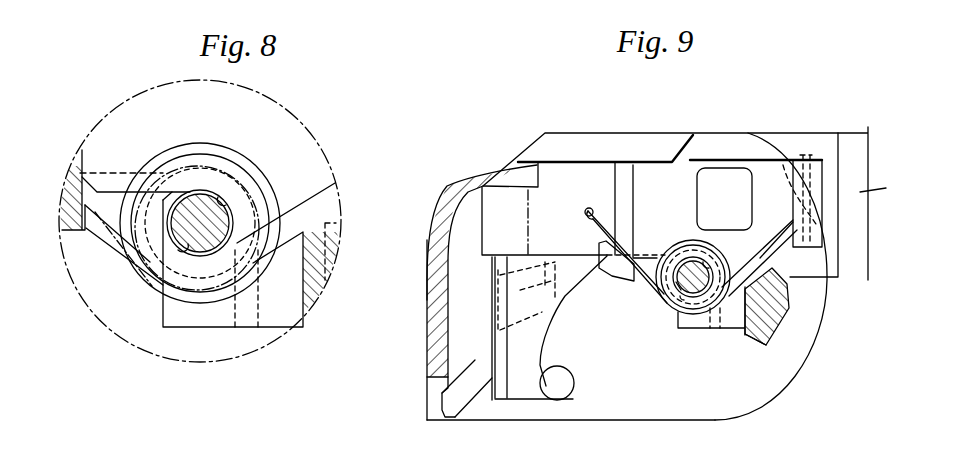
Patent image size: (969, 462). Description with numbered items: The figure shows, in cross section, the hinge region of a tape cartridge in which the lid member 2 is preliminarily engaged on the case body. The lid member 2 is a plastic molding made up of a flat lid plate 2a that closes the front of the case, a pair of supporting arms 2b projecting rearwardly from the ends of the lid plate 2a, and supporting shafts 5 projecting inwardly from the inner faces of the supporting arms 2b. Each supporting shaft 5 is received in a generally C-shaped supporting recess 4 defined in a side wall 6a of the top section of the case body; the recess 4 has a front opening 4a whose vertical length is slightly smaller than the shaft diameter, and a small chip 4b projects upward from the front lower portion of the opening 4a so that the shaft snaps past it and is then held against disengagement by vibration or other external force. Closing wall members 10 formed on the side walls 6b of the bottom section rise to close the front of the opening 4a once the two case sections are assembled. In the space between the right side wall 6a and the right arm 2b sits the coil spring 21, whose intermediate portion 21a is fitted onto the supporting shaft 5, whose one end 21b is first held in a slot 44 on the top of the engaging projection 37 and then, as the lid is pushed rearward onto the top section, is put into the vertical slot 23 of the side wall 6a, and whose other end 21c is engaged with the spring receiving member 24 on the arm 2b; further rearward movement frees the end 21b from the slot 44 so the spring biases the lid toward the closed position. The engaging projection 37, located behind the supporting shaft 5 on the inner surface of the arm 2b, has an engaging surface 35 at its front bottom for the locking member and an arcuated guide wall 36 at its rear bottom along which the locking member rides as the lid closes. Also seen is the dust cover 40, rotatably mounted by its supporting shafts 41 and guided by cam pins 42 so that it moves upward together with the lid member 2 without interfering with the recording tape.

In FIG. 9, the lid member 2 is at (438, 210).
In FIG. 9, the lid plate 2a is at (432, 253).
In FIG. 9, the supporting arms 2b is at (793, 368).
In FIG. 8, the supporting recesses 4 is at (227, 197).
In FIG. 9, the supporting recesses 4 is at (707, 264).
In FIG. 8, the opening 4a is at (170, 192).
In FIG. 9, the opening 4a is at (675, 284).
In FIG. 8, the small chip 4b is at (176, 250).
In FIG. 9, the small chip 4b is at (673, 300).
In FIG. 8, the supporting shafts 5 is at (207, 200).
In FIG. 9, the supporting shafts 5 is at (696, 300).
In FIG. 8, the side walls of the top section 6a is at (313, 160).
In FIG. 9, the side walls of the top section 6a is at (600, 173).
In FIG. 8, the side walls of the bottom section 6b is at (78, 267).
In FIG. 8, the closing wall members 10 is at (152, 218).
In FIG. 9, the coil spring 21 is at (673, 318).
In FIG. 9, the intermediate portion of the coil spring 21a is at (679, 251).
In FIG. 9, the one end of the coil spring 21b is at (783, 163).
In FIG. 9, the another end of the coil spring 21c is at (586, 214).
In FIG. 9, the vertical slot 23 is at (801, 153).
In FIG. 9, the spring receiving member 24 is at (613, 272).
In FIG. 9, the engaging surface 35 is at (748, 348).
In FIG. 9, the arcuated guide wall 36 is at (758, 308).
In FIG. 9, the engaging projection 37 is at (735, 320).
In FIG. 9, the dust cover 40 is at (561, 150).
In FIG. 9, the supporting shafts of the dust cover 41 is at (491, 303).
In FIG. 9, the cam pins 42 is at (568, 384).
In FIG. 9, the slot 44 is at (762, 240).